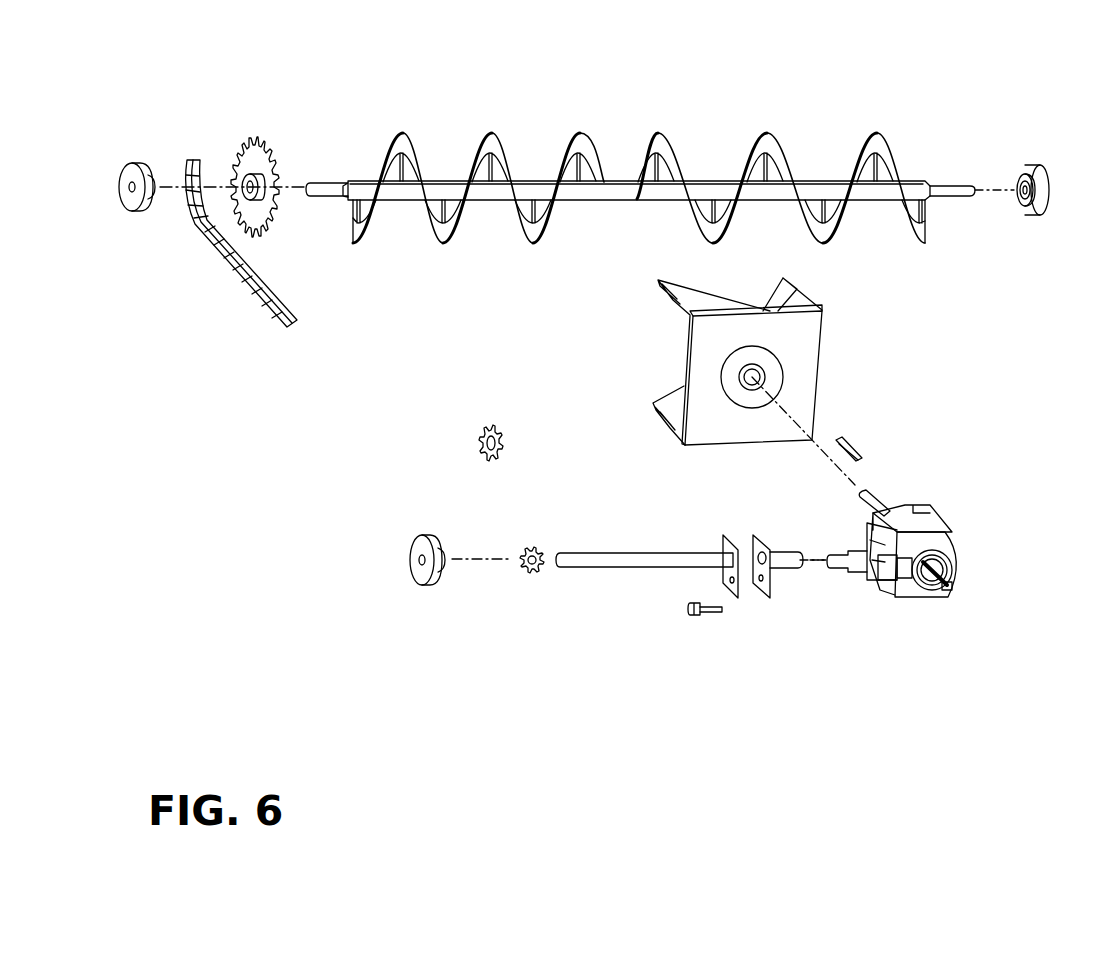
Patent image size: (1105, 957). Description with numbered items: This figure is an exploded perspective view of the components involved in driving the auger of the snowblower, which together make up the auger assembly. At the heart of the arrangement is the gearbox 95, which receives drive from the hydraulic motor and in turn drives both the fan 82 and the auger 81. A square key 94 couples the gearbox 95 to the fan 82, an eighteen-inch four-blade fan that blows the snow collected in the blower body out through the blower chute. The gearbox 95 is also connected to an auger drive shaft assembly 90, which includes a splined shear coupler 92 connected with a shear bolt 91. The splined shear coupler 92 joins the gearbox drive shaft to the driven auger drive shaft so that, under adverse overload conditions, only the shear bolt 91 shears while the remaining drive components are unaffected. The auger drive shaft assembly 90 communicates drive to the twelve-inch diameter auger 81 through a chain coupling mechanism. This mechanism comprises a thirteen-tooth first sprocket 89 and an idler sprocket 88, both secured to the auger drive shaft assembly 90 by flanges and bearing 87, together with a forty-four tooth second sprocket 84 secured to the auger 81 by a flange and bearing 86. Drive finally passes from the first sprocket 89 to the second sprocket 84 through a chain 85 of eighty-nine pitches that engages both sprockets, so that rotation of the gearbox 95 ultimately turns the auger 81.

The auger 81 is at (613, 180).
The fan 82 is at (818, 353).
The second sprocket 84 is at (252, 139).
The chain 85 is at (248, 290).
The flange and bearing 86 is at (120, 196).
The flanges and bearing 87 is at (420, 575).
The idler sprocket 88 is at (497, 428).
The first sprocket 89 is at (527, 575).
The auger drive shaft assembly 90 is at (662, 560).
The shear bolt 91 is at (712, 613).
The splined shear coupler 92 is at (755, 545).
The square key 94 is at (864, 445).
The gearbox 95 is at (963, 567).